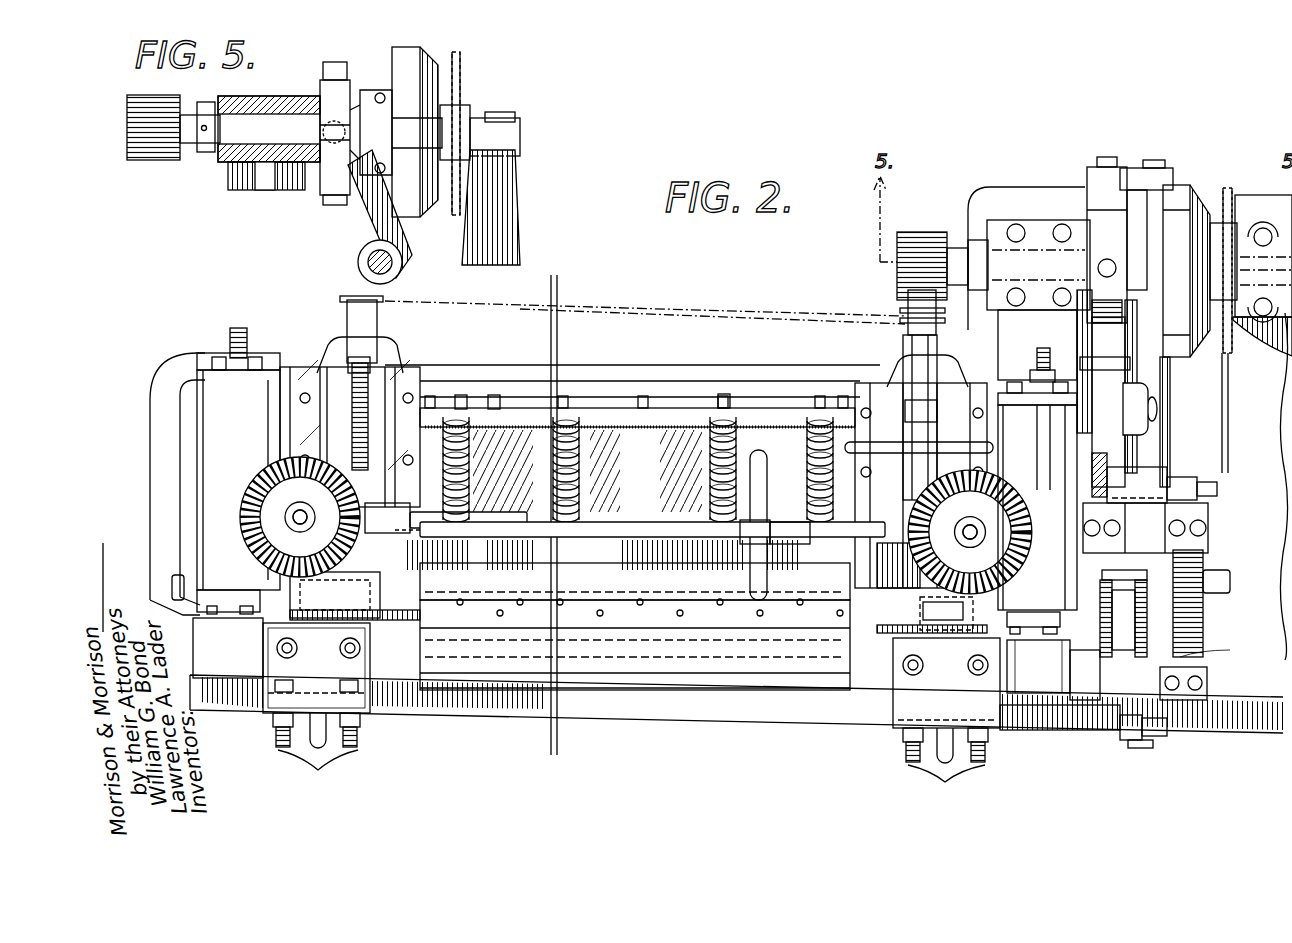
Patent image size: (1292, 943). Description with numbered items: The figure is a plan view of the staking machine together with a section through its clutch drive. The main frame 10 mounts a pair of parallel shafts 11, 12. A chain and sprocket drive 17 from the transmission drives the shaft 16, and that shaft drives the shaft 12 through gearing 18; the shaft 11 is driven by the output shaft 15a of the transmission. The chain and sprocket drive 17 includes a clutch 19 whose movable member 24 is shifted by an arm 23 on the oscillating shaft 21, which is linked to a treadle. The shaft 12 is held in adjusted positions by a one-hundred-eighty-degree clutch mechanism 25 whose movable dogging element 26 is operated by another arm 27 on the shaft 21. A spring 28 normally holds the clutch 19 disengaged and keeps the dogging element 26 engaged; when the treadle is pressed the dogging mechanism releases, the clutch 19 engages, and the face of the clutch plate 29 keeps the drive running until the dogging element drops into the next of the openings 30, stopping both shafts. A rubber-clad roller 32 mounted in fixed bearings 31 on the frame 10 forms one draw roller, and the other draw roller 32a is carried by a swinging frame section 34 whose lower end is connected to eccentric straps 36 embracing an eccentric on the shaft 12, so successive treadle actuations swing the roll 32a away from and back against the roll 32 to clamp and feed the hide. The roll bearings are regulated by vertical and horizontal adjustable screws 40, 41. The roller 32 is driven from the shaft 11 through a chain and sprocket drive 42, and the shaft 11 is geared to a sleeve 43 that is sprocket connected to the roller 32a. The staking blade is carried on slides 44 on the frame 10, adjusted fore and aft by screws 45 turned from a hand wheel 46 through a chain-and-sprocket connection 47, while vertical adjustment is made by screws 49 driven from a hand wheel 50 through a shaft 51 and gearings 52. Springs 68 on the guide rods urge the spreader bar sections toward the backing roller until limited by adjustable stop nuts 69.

In FIG. 5, the main frame 10 is at (252, 185).
In FIG. 2, the main frame 10 is at (215, 352).
In FIG. 2, the shaft 11 is at (1190, 625).
In FIG. 2, the shaft 12 is at (1150, 405).
In FIG. 2, the output shaft of transmission 15a is at (1205, 578).
In FIG. 5, the shaft 16 is at (280, 137).
In FIG. 2, the shaft 16 is at (957, 245).
In FIG. 5, the chain and sprocket drive 17 is at (462, 78).
In FIG. 2, the chain and sprocket drive 17 is at (1230, 375).
In FIG. 5, the gearing 18 is at (160, 150).
In FIG. 2, the gearing 18 is at (897, 282).
In FIG. 5, the clutch 19 is at (420, 75).
In FIG. 2, the clutch 19 is at (1180, 185).
In FIG. 5, the oscillating shaft 21 is at (392, 262).
In FIG. 2, the oscillating shaft 21 is at (1152, 160).
In FIG. 5, the arm 23 is at (375, 205).
In FIG. 2, the arm 23 is at (1135, 185).
In FIG. 5, the movable member of clutch 24 is at (355, 110).
In FIG. 2, the movable member of clutch 24 is at (1105, 195).
In FIG. 2, the 180° clutch mechanism 25 is at (1125, 367).
In FIG. 2, the movable dogging element 26 is at (1120, 490).
In FIG. 2, the arm 27 is at (1210, 490).
In FIG. 2, the spring 28 is at (1050, 730).
In FIG. 2, the clutch plate 29 is at (1108, 335).
In FIG. 2, the openings 30 is at (1112, 478).
In FIG. 2, the fixed bearings 31 is at (175, 590).
In FIG. 2, the rubber-clad roller 32 is at (498, 578).
In FIG. 2, the draw roller 32a is at (498, 675).
In FIG. 2, the swinging frame section 34 is at (332, 672).
In FIG. 2, the eccentric straps 36 is at (330, 350).
In FIG. 2, the vertical adjustable screws 40 is at (345, 650).
In FIG. 2, the horizontal adjustable screws 41 is at (630, 756).
In FIG. 2, the chain and sprocket drive 42 is at (1135, 600).
In FIG. 2, the sleeve 43 is at (1110, 730).
In FIG. 2, the slides 44 is at (340, 420).
In FIG. 2, the screws 45 is at (368, 365).
In FIG. 2, the hand wheel 46 is at (985, 450).
In FIG. 2, the chain-and-sprocket connection 47 is at (358, 310).
In FIG. 2, the screws 49 is at (295, 520).
In FIG. 2, the hand wheel 50 is at (760, 480).
In FIG. 2, the shaft 51 is at (508, 518).
In FIG. 2, the gearings 52 is at (342, 500).
In FIG. 2, the springs 68 is at (472, 435).
In FIG. 2, the adjustable stop nuts 69 is at (478, 400).